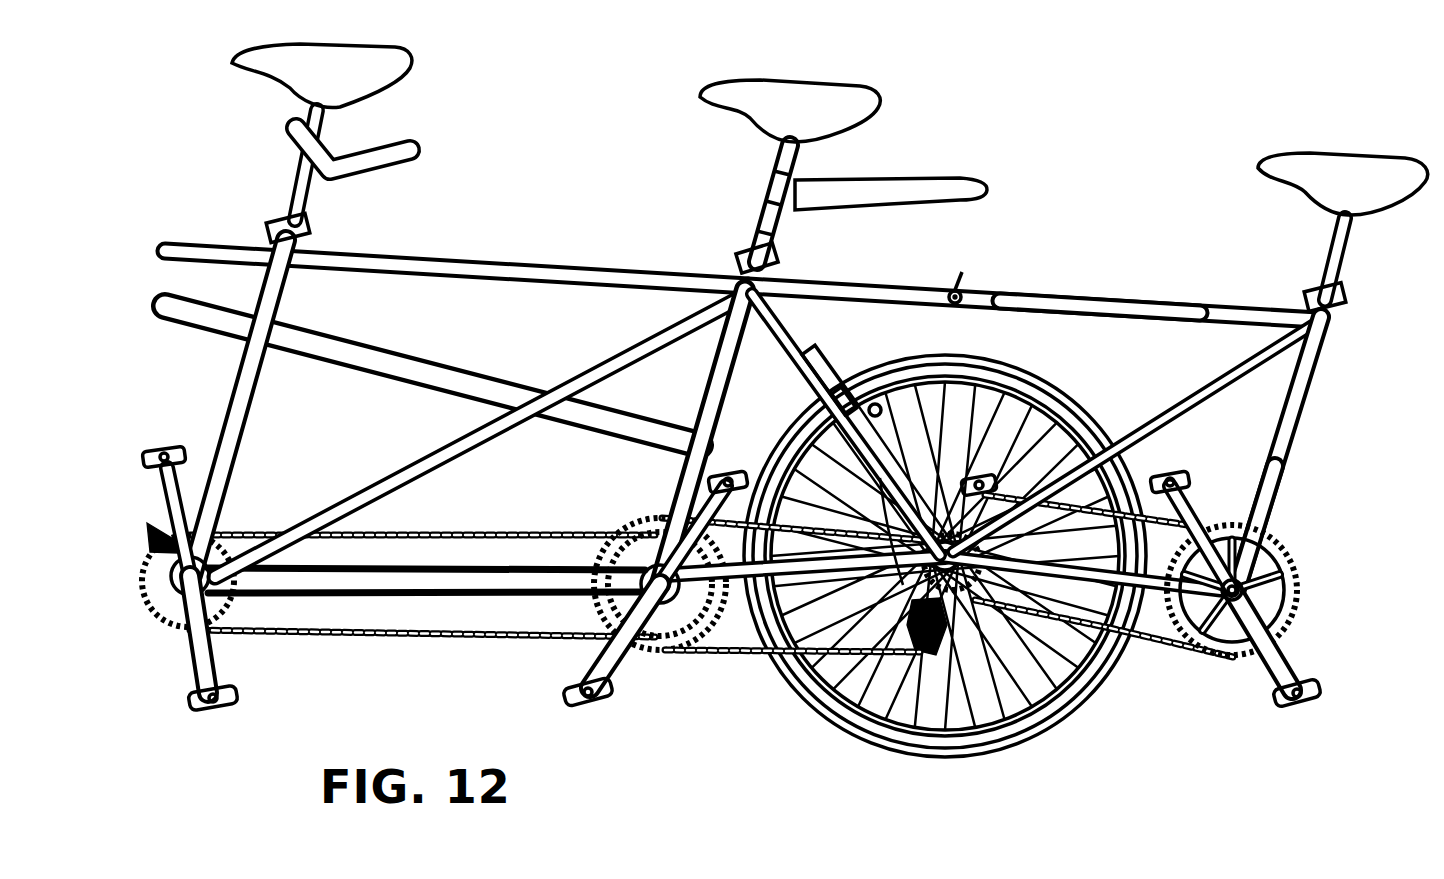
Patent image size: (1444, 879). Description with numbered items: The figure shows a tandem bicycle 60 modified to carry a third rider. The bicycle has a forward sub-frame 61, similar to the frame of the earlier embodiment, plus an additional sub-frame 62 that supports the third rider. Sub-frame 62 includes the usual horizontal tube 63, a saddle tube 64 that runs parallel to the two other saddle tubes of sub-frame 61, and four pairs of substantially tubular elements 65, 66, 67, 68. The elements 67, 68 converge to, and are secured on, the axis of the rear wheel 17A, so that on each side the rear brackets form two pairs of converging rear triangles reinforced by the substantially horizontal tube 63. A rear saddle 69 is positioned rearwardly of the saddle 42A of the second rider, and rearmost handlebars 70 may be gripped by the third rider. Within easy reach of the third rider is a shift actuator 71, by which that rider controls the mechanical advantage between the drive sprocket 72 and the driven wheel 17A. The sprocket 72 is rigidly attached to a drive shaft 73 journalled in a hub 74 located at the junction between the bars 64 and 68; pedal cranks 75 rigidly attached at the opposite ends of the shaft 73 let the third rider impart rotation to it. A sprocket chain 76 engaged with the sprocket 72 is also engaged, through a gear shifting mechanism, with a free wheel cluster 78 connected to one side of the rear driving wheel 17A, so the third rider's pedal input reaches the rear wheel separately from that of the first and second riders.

The rear wheel 17A is at (1042, 723).
The saddle of the second rider 42A is at (878, 102).
The bicycle 60 is at (687, 474).
The sub-frame 61 is at (506, 283).
The additional sub-frame 62 is at (1100, 322).
The horizontal tube 63 is at (1080, 303).
The saddle tube 64 is at (1307, 407).
The tubular elements 65 is at (795, 343).
The tubular elements 66 is at (1236, 375).
The tubular elements 67 is at (752, 663).
The tubular elements 68 is at (1085, 638).
The rear saddle 69 is at (1297, 197).
The rearmost handlebars 70 is at (962, 203).
The shift actuator 71 is at (952, 283).
The drive sprocket 72 is at (1277, 552).
The drive shaft 73 is at (1243, 591).
The hub 74 is at (1262, 530).
The pedal cranks 75 is at (1282, 666).
The sprocket chain 76 is at (1217, 664).
The free wheel cluster 78 is at (976, 745).